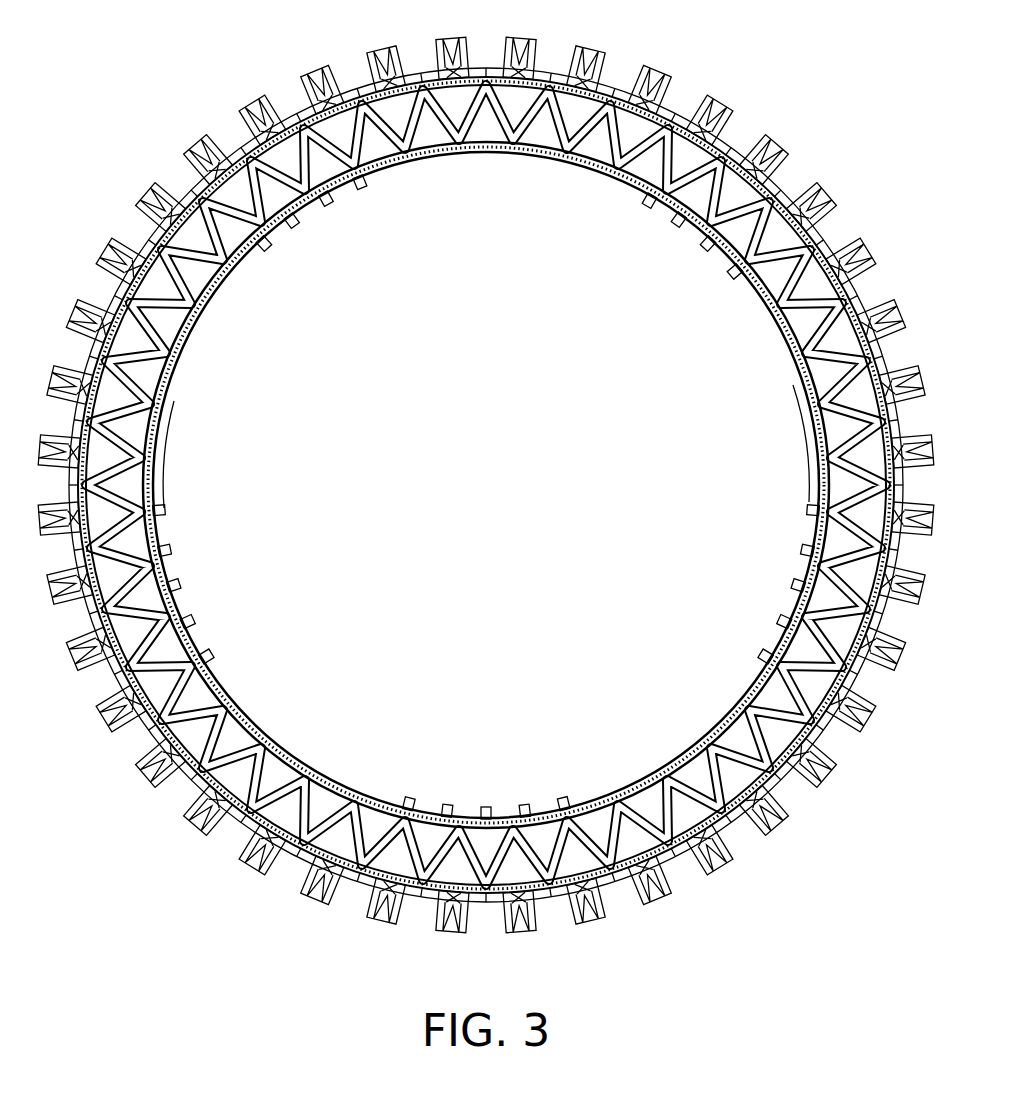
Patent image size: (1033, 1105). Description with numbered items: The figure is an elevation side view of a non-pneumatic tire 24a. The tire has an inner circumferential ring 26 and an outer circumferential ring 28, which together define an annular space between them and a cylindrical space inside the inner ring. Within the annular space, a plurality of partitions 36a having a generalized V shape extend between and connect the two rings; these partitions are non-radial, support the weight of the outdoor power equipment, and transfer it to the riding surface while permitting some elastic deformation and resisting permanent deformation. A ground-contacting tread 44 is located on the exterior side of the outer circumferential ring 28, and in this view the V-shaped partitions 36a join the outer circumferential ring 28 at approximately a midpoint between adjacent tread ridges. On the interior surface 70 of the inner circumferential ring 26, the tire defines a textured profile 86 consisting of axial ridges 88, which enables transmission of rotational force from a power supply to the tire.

The non-pneumatic tire 24a is at (486, 454).
The inner circumferential ring 26 is at (486, 485).
The outer circumferential ring 28 is at (486, 485).
The partitions 36a is at (486, 516).
The ground-contacting tread 44 is at (486, 515).
The interior surface 70 is at (488, 157).
The textured profile 86 is at (334, 299).
The axial ridges 88 is at (486, 497).